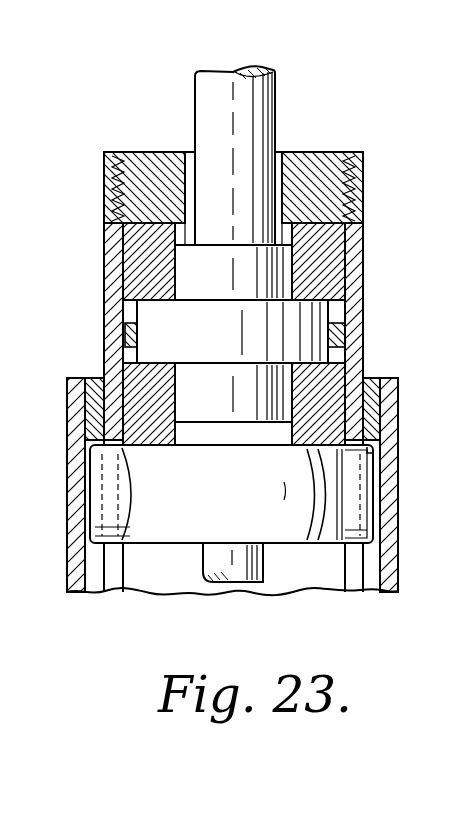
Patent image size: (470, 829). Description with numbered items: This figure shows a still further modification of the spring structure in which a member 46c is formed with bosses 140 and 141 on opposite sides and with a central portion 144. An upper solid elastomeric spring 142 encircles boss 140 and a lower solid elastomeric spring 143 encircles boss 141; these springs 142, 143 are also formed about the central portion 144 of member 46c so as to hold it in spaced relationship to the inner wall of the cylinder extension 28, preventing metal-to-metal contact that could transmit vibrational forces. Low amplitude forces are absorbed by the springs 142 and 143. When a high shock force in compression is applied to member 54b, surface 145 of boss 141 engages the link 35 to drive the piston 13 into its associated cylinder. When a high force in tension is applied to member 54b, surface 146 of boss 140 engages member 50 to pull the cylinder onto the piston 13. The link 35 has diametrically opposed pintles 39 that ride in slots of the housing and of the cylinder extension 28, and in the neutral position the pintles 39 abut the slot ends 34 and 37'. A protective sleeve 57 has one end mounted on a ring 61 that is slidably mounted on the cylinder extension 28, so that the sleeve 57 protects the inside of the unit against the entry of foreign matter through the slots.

The member 54b is at (233, 44).
The member 50 is at (313, 162).
The surface 146 is at (243, 243).
The upper solid elastomeric spring 142 is at (113, 232).
The cylinder extension 28 is at (365, 238).
The boss 140 is at (200, 276).
The central portion 144 is at (150, 330).
The member 46c is at (345, 330).
The boss 141 is at (192, 380).
The lower solid elastomeric spring 143 is at (90, 400).
The slot end 37' is at (50, 485).
The ring 61 is at (370, 410).
The slot end 34 is at (370, 452).
The surface 145 is at (250, 422).
The spherical loading member or link 35 is at (147, 505).
The pintles 39 is at (120, 518).
The piston 13 is at (265, 565).
The protective sleeve 57 is at (393, 591).